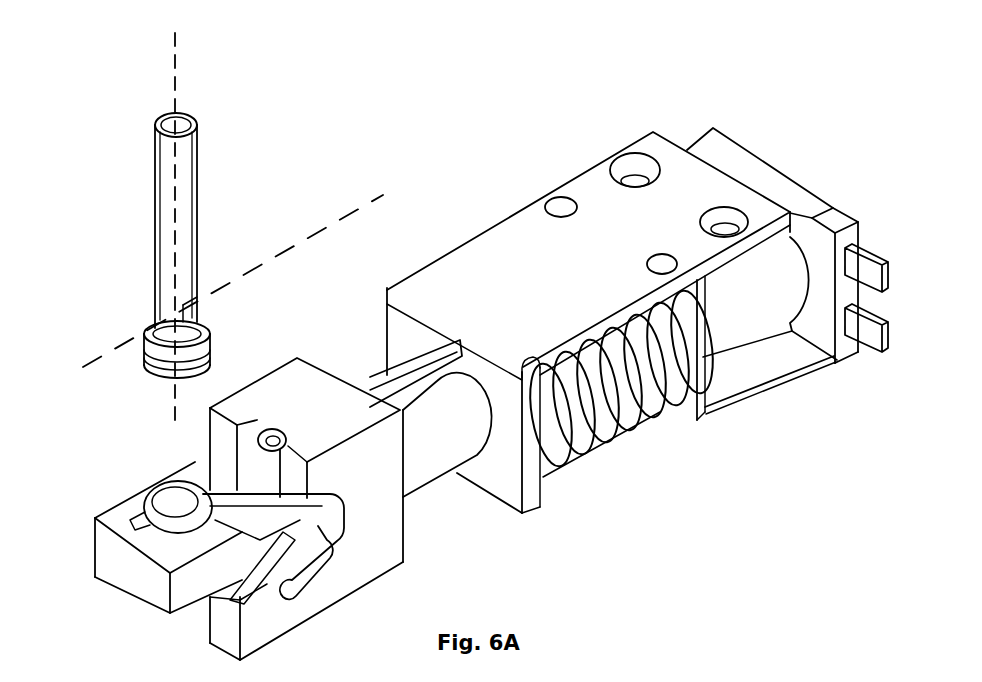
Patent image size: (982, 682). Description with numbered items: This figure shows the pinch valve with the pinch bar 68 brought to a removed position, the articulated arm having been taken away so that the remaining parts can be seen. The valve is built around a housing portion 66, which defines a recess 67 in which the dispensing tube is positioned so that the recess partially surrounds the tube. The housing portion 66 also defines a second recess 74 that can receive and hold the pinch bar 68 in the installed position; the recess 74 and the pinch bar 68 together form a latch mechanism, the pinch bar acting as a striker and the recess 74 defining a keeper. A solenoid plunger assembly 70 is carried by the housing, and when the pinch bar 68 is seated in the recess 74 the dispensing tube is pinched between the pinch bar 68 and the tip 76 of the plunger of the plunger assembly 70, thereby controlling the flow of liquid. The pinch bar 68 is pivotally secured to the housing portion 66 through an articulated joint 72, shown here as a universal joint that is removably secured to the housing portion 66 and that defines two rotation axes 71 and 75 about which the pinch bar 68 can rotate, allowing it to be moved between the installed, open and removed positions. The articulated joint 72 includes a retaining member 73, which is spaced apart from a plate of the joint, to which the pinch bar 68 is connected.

The housing portion 66 is at (441, 120).
The recess 67 is at (246, 425).
The pinch bar 68 is at (160, 193).
The solenoid plunger assembly 70 is at (602, 466).
The rotation axis 71 is at (175, 60).
The articulated joint 72 is at (150, 333).
The retaining member 73 is at (150, 363).
The recess 74 is at (325, 534).
The rotation axis 75 is at (320, 230).
The tip 76 is at (270, 523).